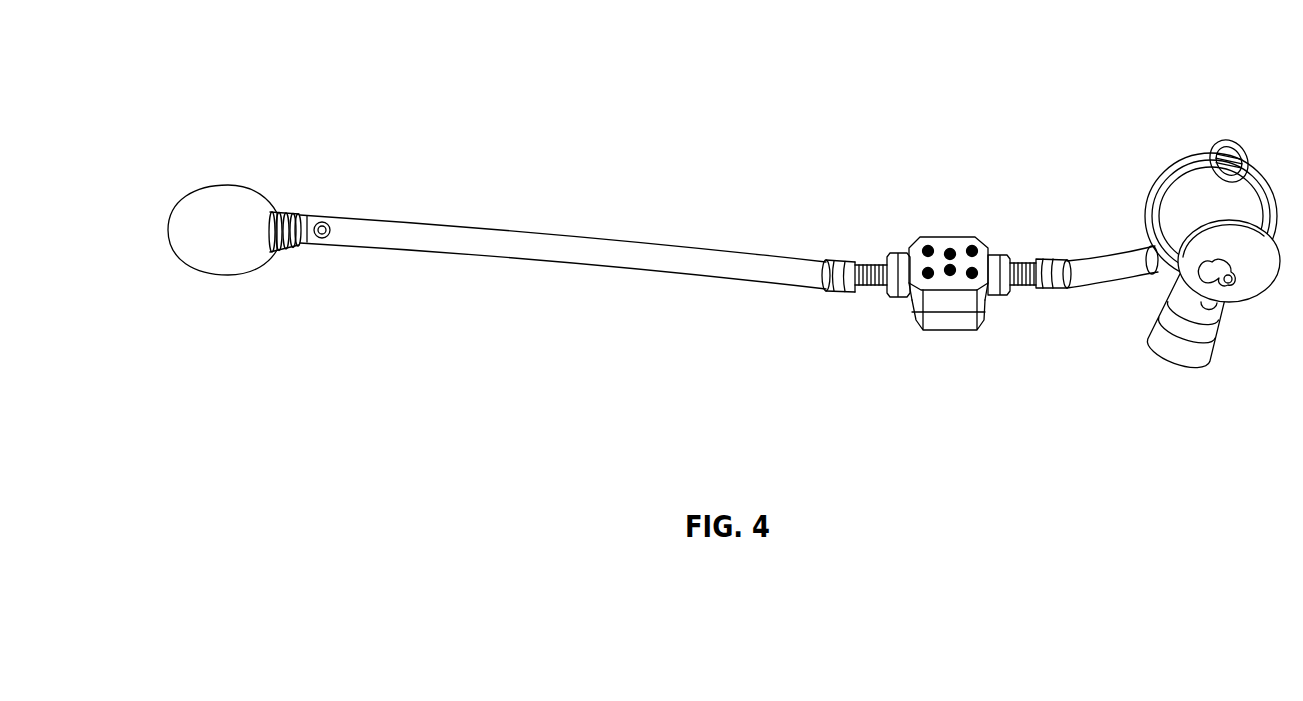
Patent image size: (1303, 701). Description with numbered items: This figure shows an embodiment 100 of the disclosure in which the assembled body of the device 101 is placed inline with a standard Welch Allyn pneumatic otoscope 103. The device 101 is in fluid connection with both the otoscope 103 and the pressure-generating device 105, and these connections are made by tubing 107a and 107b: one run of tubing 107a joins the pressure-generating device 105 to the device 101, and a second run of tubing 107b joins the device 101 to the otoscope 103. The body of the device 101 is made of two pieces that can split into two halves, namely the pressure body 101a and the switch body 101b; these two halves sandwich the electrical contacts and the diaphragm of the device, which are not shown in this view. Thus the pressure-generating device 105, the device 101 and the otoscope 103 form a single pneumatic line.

The embodiment 100 is at (214, 60).
The device 101 is at (915, 200).
The pressure body 101a is at (940, 300).
The switch body 101b is at (955, 322).
The pneumatic otoscope 103 is at (1166, 378).
The pressure-generating device 105 is at (215, 302).
The tubing 107a is at (483, 268).
The tubing 107b is at (1104, 306).